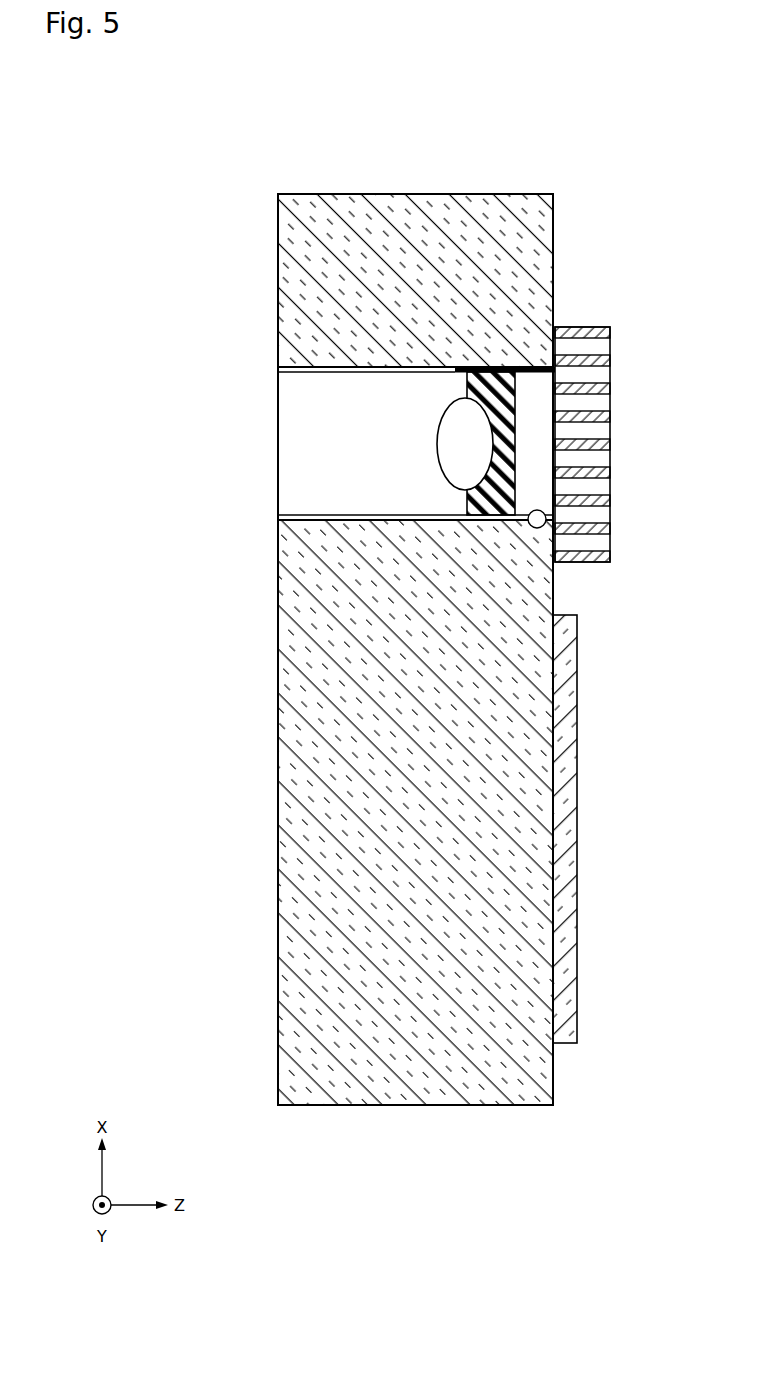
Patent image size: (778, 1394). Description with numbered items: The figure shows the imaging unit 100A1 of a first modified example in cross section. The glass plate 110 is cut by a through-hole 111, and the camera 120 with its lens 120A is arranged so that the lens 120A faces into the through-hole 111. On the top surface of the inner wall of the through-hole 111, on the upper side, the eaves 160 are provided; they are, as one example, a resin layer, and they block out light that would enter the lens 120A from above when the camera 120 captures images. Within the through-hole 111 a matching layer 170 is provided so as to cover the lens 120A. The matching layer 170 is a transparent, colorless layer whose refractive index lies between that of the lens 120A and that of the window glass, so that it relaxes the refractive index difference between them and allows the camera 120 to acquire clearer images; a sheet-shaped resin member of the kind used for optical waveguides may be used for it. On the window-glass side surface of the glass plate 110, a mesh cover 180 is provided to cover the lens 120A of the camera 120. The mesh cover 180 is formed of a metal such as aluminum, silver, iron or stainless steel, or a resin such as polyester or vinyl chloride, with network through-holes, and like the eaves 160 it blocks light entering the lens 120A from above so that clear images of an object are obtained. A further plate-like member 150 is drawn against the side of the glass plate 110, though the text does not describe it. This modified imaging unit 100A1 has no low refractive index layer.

The imaging unit 100A1 is at (605, 132).
The glass plate 110 is at (400, 1088).
The through-hole 111 is at (541, 531).
The camera 120 is at (297, 443).
The lens 120A is at (460, 443).
The wiring board 150 is at (567, 850).
The eaves 160 is at (528, 373).
The matching layer 170 is at (505, 460).
The mesh cover 180 is at (580, 327).